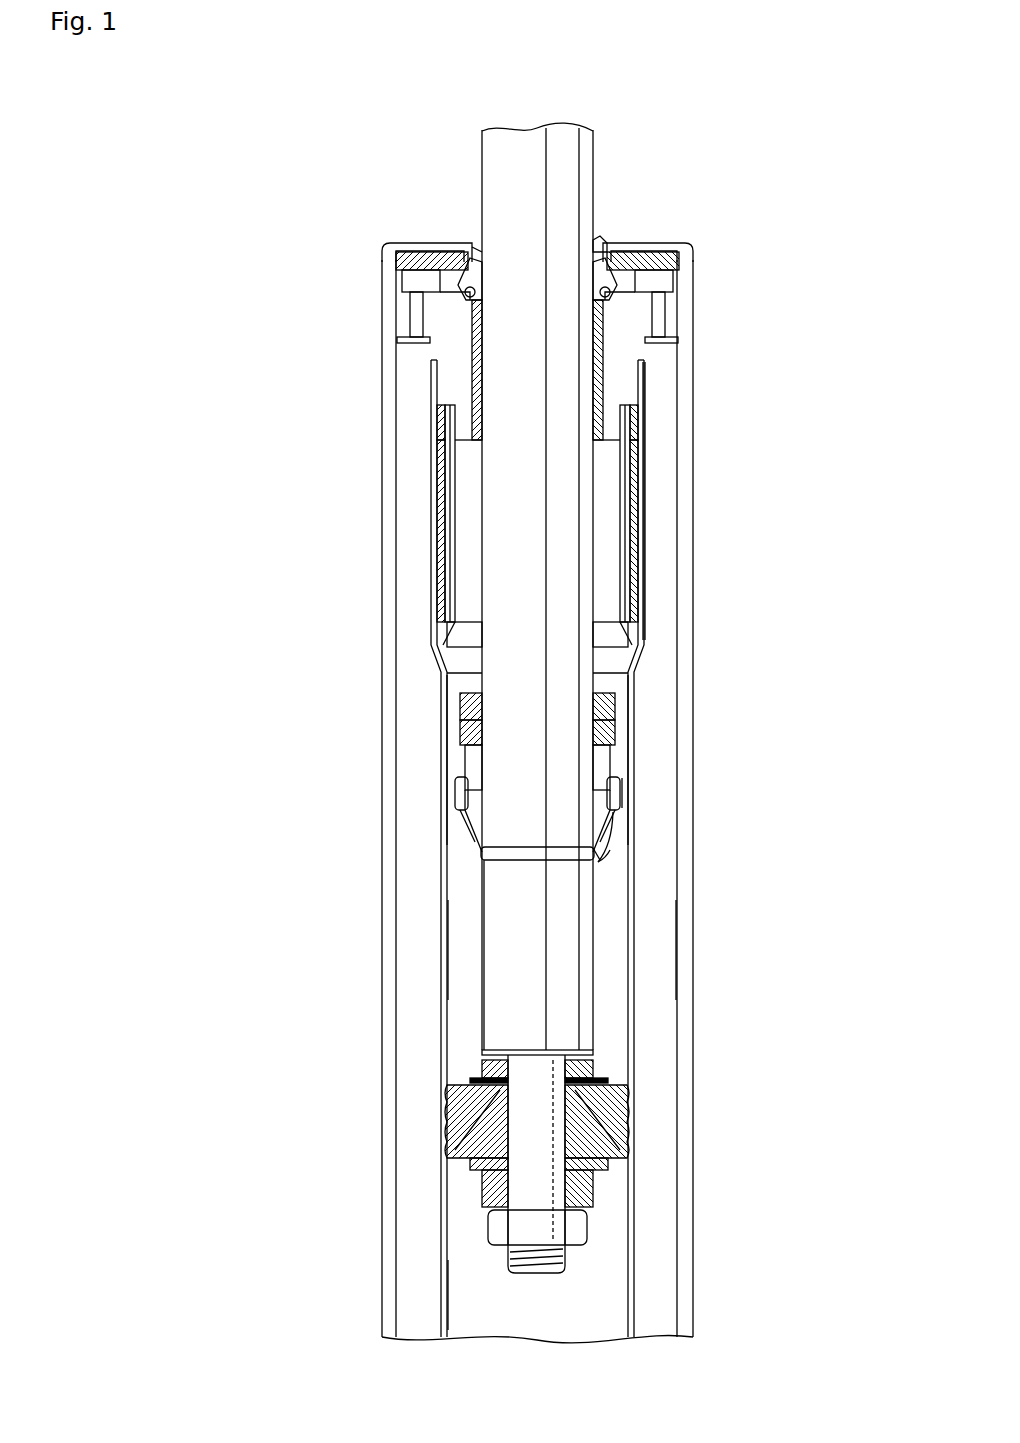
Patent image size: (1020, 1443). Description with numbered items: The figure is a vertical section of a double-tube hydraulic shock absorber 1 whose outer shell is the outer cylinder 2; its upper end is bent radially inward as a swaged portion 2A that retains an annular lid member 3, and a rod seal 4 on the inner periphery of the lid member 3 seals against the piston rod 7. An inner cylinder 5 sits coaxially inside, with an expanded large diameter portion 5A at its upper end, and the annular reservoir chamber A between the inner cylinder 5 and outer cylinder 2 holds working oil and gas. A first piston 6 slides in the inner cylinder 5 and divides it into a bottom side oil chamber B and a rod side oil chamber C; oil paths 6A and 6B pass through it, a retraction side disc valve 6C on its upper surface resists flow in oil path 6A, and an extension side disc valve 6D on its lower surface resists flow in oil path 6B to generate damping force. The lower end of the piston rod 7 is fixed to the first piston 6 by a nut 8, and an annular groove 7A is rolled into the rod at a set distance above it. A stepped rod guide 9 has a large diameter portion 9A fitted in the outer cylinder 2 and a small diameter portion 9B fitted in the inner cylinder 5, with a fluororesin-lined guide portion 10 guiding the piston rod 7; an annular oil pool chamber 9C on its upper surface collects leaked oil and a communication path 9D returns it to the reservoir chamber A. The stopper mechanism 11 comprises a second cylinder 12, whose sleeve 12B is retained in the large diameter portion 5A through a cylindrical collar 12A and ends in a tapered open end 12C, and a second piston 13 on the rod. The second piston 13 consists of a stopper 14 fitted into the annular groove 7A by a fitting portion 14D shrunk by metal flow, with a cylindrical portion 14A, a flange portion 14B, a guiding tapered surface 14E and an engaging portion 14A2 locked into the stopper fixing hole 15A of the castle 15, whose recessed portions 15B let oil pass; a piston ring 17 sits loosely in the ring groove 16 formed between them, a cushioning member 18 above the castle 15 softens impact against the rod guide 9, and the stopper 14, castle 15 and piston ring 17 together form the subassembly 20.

The hydraulic shock absorber 1 is at (330, 178).
The outer cylinder 2 is at (690, 536).
The swaged portion 2A is at (695, 247).
The lid member 3 is at (618, 262).
The rod seal 4 is at (602, 240).
The inner cylinder 5 is at (440, 948).
The large diameter portion 5A is at (647, 498).
The first piston 6 is at (450, 1092).
The oil path 6A is at (447, 1118).
The oil path 6B is at (627, 1112).
The retraction side disc valve 6C is at (605, 1076).
The extension side disc valve 6D is at (480, 1167).
The piston rod 7 is at (505, 190).
The annular groove 7A is at (480, 862).
The nut 8 is at (575, 1225).
The rod guide 9 is at (414, 352).
The large diameter portion 9A is at (663, 312).
The small diameter portion 9B is at (638, 375).
The oil pool chamber 9C is at (455, 285).
The communication path 9D is at (468, 325).
The guide portion 10 is at (462, 373).
The stopper mechanism 11 is at (656, 427).
The second cylinder 12 is at (428, 545).
The cylindrical collar 12A is at (442, 442).
The sleeve 12B is at (450, 497).
The open end 12C is at (632, 636).
The second piston 13 is at (455, 849).
The stopper 14 is at (478, 827).
The cylindrical portion 14A is at (615, 790).
The engaging portion 14A2 is at (600, 757).
The flange portion 14B is at (603, 828).
The fitting portion 14D is at (600, 876).
The tapered surface 14E is at (594, 861).
The castle 15 is at (455, 722).
The stopper fixing hole 15A is at (458, 745).
The recessed portions 15B is at (448, 777).
The ring groove 16 is at (600, 772).
The piston ring 17 is at (448, 800).
The cushioning member 18 is at (613, 705).
The subassembly 20 is at (629, 803).
The reservoir chamber A is at (655, 960).
The bottom side oil chamber B is at (465, 1297).
The rod side oil chamber C is at (465, 1013).